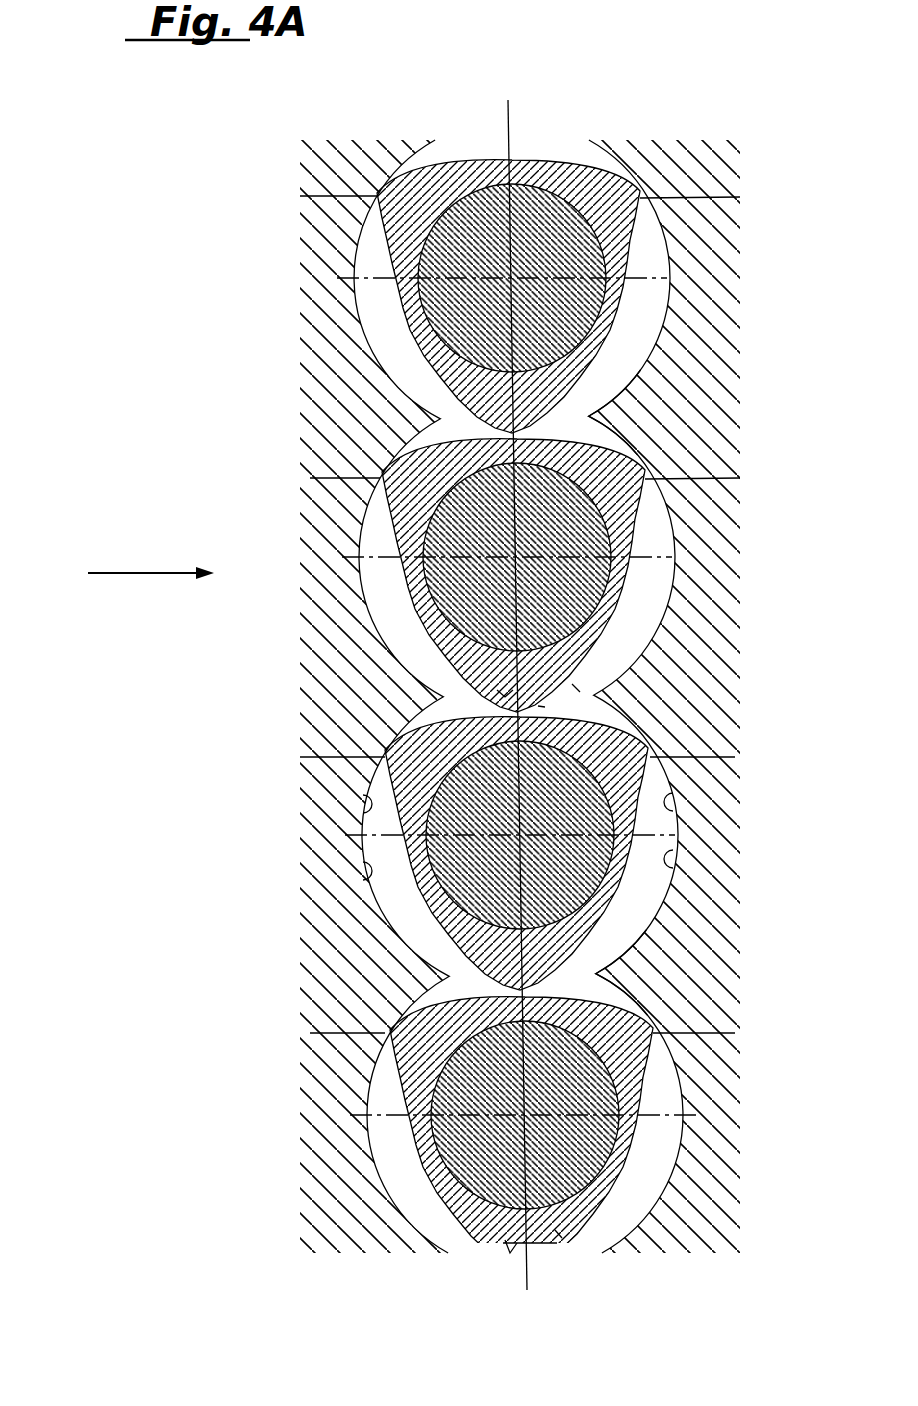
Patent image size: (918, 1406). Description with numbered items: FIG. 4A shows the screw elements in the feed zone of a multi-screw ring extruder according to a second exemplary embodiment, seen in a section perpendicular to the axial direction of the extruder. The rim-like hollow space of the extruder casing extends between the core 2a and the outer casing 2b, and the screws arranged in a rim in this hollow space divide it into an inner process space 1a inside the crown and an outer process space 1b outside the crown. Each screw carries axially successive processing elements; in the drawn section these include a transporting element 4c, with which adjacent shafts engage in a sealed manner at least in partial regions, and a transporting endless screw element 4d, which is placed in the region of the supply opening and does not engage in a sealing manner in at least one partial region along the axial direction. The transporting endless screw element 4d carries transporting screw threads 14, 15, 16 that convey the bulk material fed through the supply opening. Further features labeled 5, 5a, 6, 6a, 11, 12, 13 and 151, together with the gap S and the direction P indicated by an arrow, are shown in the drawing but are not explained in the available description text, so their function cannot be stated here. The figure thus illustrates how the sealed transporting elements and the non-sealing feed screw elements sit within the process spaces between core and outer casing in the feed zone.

The inner process space 1a is at (650, 300).
The outer process space 1b is at (387, 313).
The core 2a is at (690, 600).
The outer casing 2b is at (330, 598).
The transporting element 4c is at (613, 347).
The transporting endless screw element 4d is at (640, 571).
The third clamping plate half 5 is at (672, 830).
The projection of clamping plate half 5a is at (672, 870).
The third clamping plate half 6 is at (364, 828).
The projection of clamping plate half 6a is at (370, 880).
The clamping edge 11 is at (740, 197).
The clamping tooth 12 is at (597, 414).
The clamping edge 13 is at (300, 196).
The transporting screw thread 14 is at (740, 478).
The transporting screw thread 15 is at (580, 688).
The transporting screw thread 16 is at (310, 478).
The coating tip edge 151 is at (505, 697).
The gap S is at (545, 707).
The pressing direction P is at (151, 557).